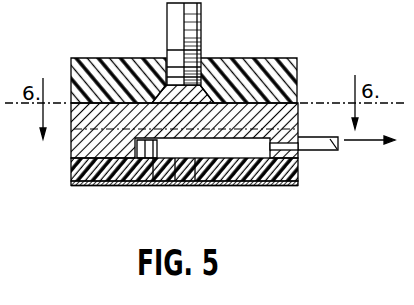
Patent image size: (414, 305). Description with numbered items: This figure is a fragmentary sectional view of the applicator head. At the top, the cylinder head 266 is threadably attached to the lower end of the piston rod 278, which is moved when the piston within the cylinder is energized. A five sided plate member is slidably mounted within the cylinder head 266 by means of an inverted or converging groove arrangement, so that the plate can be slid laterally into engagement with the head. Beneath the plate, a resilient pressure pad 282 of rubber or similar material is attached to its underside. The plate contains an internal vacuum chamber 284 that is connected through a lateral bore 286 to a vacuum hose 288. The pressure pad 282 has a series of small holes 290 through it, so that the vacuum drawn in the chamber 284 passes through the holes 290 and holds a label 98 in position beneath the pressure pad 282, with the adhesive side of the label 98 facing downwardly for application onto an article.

The cylinder head 266 is at (264, 65).
The piston rod 278 is at (216, 44).
The resilient pressure pad 282 is at (297, 167).
The internal vacuum chamber 284 is at (122, 187).
The lateral bore 286 is at (291, 102).
The vacuum hose 288 is at (319, 151).
The small holes 290 is at (190, 188).
The label 98 is at (243, 187).